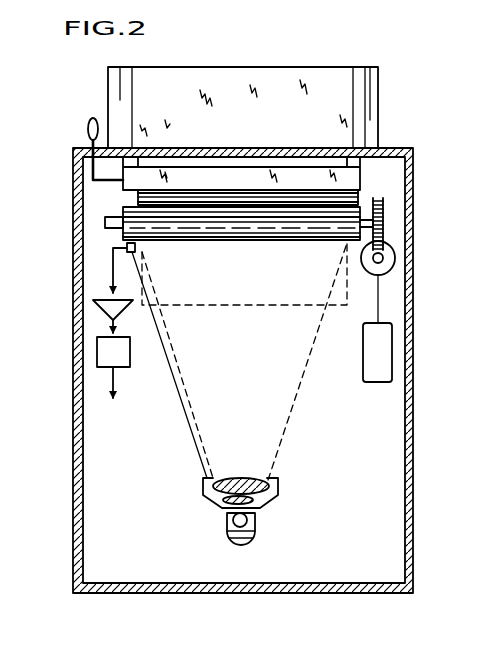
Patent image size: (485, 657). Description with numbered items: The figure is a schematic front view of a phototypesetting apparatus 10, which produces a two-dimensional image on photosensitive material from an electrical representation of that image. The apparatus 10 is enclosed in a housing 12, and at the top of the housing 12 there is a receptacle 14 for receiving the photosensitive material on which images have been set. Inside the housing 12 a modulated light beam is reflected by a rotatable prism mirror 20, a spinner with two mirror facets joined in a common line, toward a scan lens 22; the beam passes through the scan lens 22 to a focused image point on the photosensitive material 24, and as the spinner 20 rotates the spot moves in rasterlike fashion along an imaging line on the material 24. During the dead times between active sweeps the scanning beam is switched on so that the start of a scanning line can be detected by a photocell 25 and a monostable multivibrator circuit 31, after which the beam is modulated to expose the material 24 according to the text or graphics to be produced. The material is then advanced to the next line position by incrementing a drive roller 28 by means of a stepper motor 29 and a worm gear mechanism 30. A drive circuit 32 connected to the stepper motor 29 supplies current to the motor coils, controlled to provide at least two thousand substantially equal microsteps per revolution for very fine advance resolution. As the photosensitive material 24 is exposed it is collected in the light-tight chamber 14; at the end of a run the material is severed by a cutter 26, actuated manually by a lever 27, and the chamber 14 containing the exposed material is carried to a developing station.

The phototypesetting apparatus 10 is at (152, 433).
The housing 12 is at (73, 340).
The receptacle 14 is at (381, 100).
The rotatable prism mirror 20 is at (266, 527).
The scan lens 22 is at (283, 484).
The photosensitive material 24 is at (355, 160).
The photocell 25 is at (137, 247).
The cutter 26 is at (123, 190).
The lever 27 is at (88, 132).
The drive roller 28 is at (268, 222).
The stepper motor 29 is at (362, 258).
The worm gear mechanism 30 is at (392, 203).
The monostable multivibrator circuit 31 is at (115, 353).
The drive circuit 32 is at (380, 370).